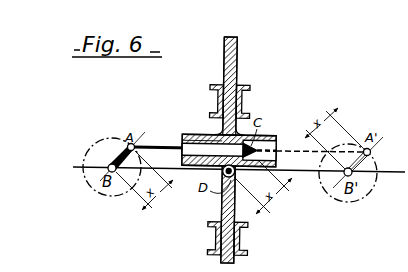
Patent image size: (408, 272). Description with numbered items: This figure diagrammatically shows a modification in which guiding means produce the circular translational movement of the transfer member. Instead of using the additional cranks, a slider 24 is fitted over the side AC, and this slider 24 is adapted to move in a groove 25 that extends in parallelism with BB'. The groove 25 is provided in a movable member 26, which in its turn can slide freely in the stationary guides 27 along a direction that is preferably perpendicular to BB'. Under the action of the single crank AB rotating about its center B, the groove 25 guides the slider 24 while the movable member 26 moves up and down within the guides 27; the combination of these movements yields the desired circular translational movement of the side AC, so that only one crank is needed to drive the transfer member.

The slider 24 is at (268, 138).
The groove 25 is at (191, 143).
The movable member 26 is at (233, 54).
The stationary guides 27 is at (213, 100).